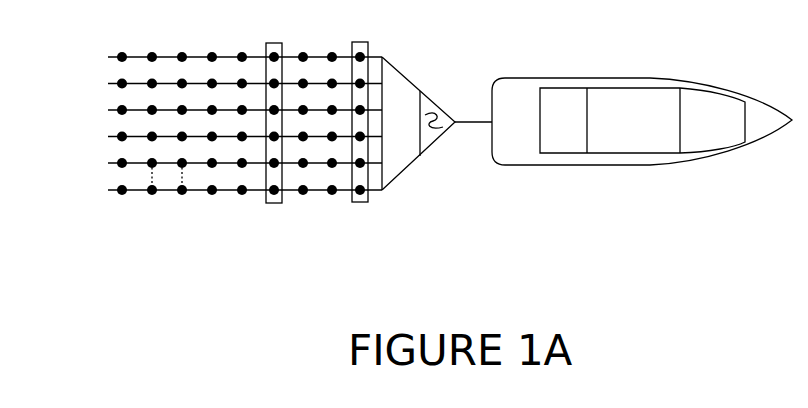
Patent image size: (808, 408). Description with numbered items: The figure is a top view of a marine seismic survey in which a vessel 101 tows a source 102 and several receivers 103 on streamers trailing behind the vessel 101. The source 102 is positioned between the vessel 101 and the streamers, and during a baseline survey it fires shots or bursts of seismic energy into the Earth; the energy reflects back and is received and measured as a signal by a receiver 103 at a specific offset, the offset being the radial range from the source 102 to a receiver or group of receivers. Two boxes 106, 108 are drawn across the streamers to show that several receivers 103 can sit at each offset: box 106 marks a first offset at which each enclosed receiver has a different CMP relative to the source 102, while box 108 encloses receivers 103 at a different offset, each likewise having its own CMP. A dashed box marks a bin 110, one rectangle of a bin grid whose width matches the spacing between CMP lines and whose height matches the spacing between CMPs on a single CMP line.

The vessel 101 is at (567, 148).
The source 102 is at (432, 143).
The receivers 103 is at (358, 200).
The box 106 is at (362, 200).
The box 108 is at (267, 203).
The bin 110 is at (165, 190).